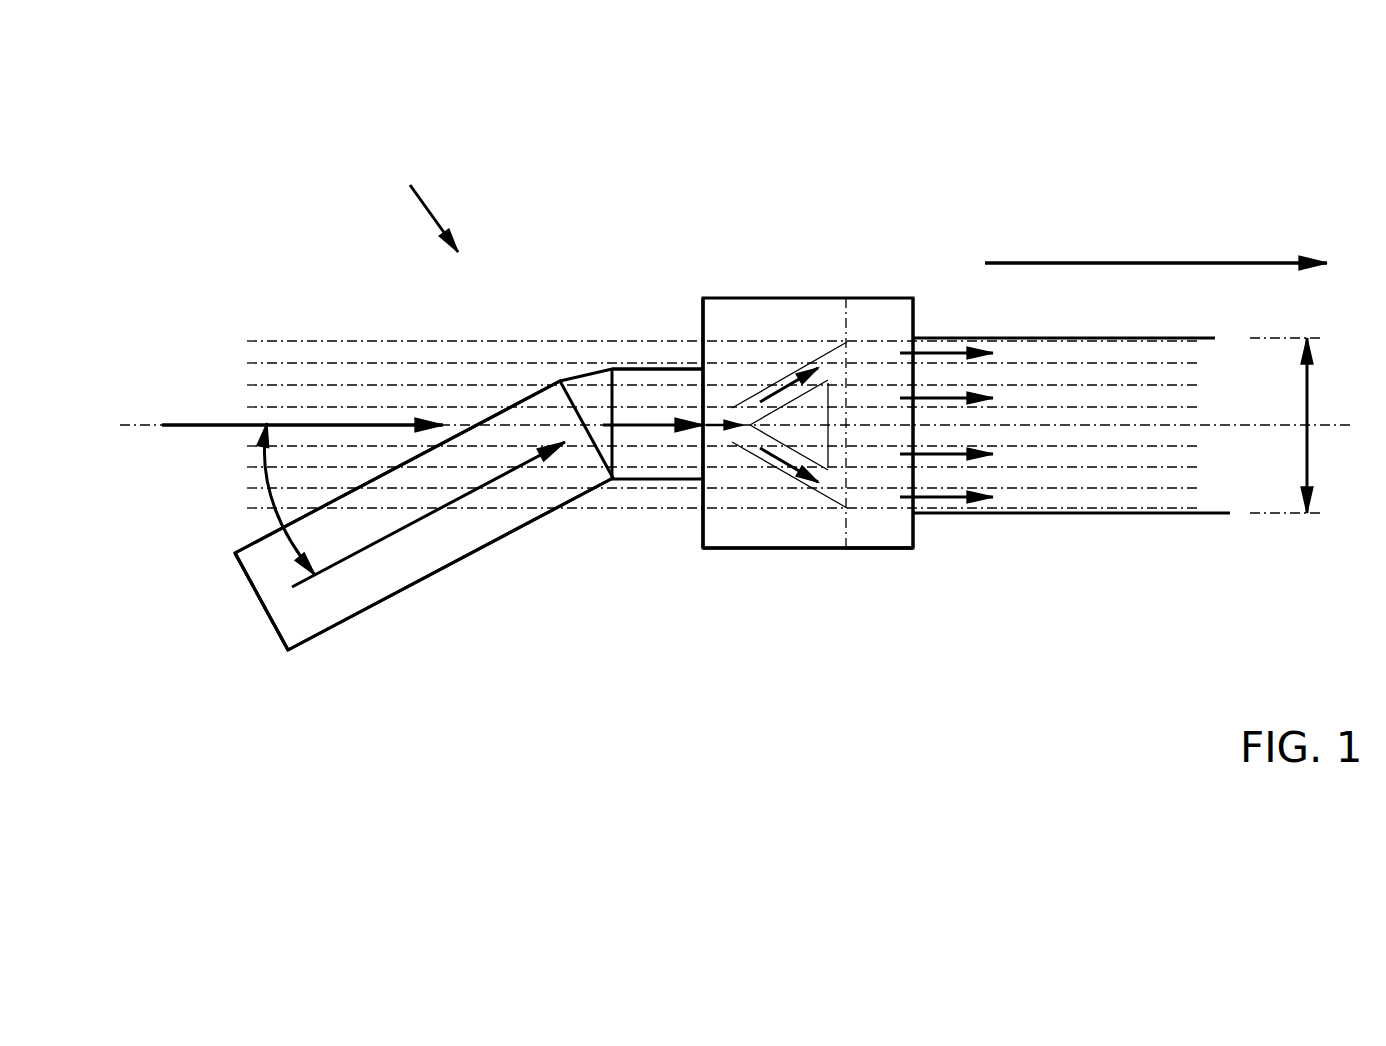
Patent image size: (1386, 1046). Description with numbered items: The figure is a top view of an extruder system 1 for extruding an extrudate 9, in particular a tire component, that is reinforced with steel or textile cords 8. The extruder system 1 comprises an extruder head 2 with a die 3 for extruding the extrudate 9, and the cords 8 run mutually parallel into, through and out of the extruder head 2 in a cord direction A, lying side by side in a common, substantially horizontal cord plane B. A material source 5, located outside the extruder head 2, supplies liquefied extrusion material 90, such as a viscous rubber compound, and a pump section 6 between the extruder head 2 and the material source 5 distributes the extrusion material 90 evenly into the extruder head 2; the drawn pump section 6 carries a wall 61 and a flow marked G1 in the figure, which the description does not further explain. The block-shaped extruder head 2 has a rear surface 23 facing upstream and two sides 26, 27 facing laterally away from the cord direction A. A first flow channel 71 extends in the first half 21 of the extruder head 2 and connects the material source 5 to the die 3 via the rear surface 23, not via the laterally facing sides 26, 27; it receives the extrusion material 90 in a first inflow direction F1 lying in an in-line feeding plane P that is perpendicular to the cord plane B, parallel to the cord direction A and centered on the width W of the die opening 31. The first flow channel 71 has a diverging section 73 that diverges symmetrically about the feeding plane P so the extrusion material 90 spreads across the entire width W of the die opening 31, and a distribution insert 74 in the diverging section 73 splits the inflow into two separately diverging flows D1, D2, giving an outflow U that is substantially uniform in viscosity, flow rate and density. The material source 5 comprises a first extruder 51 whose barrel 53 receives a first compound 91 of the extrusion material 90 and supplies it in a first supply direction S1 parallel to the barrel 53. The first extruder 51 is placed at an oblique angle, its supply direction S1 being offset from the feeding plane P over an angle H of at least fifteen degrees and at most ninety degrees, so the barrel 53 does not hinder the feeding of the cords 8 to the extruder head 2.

The extruder system 1 is at (428, 204).
The extruder head 2 is at (743, 298).
The die 3 is at (702, 307).
The material source 5 is at (300, 627).
The pump section 6 is at (640, 369).
The cords 8 is at (273, 382).
The extrudate 9 is at (1087, 500).
The first half 21 is at (720, 550).
The rear surface 23 is at (702, 328).
The side 26 is at (836, 298).
The side 27 is at (827, 550).
The die opening 31 is at (877, 497).
The first extruder 51 is at (453, 547).
The barrel 53 is at (522, 527).
The channel top wall 61 is at (680, 378).
The first flow channel 71 is at (758, 457).
The diverging section 73 is at (760, 390).
The distribution insert 74 is at (828, 383).
The extrusion material 90 is at (335, 605).
The first compound 91 is at (335, 605).
The cord direction A is at (193, 420).
The cord plane B is at (393, 365).
The feeding plane P is at (733, 425).
The angle H is at (270, 500).
The width W is at (1298, 425).
The first supply direction S1 is at (380, 538).
The guided beam G1 is at (643, 427).
The first inflow direction F1 is at (710, 433).
The diverging flow D1 is at (780, 390).
The diverging flow D2 is at (773, 464).
The outflow U is at (940, 453).